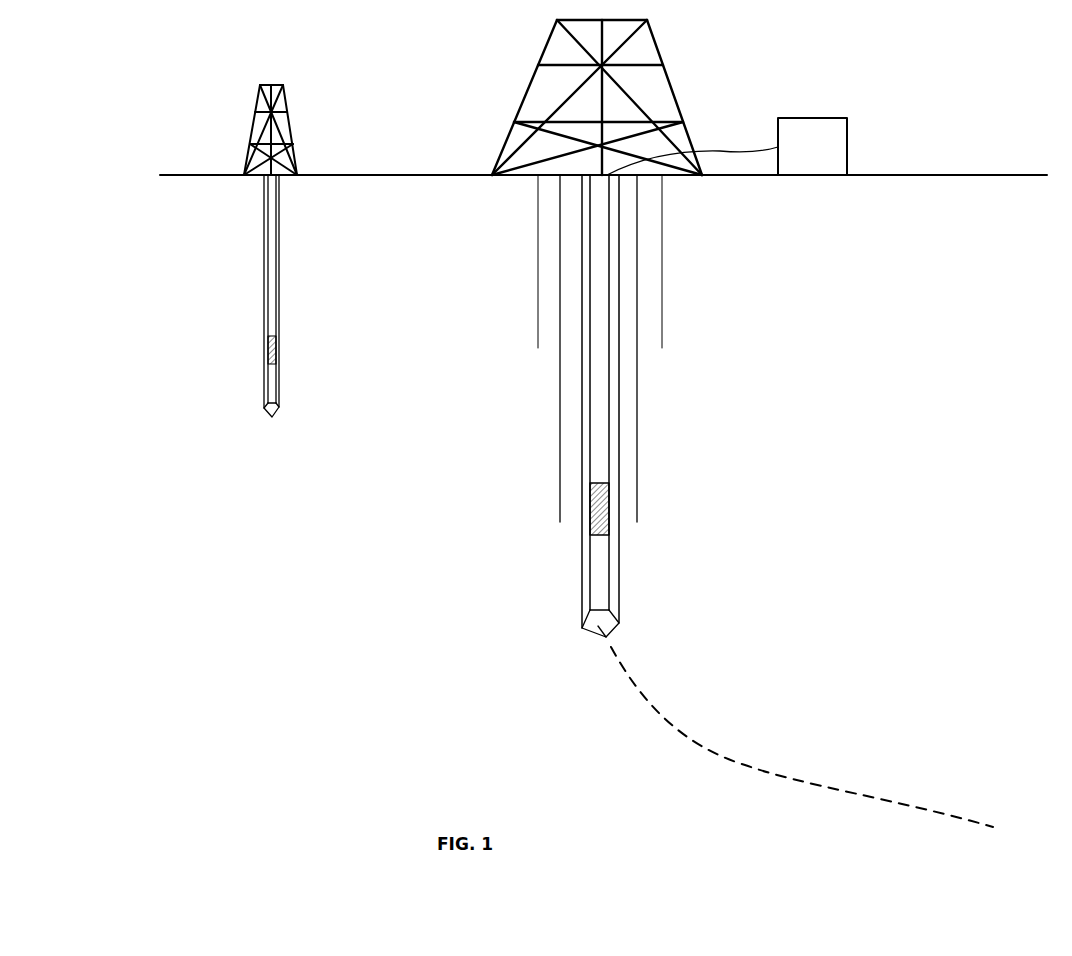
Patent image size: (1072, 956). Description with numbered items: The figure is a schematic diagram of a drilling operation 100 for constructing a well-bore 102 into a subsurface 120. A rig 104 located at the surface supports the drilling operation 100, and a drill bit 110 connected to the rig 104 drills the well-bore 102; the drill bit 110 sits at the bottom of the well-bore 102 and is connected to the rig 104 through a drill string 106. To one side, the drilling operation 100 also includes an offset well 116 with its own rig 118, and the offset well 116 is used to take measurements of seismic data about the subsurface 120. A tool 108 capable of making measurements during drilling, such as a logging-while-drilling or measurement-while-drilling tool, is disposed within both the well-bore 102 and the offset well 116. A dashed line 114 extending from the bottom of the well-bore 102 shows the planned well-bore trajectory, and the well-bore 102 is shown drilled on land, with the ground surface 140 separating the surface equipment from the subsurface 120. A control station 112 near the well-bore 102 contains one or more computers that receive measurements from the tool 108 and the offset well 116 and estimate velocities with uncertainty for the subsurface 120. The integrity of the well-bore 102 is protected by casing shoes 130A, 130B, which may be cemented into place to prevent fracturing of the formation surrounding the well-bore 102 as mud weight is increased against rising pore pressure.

The drilling operation 100 is at (108, 110).
The well-bore 102 is at (619, 388).
The rig 104 is at (675, 88).
The drill string 106 is at (590, 358).
The tool 108 is at (599, 538).
The drill bit 110 is at (592, 626).
The control station 112 is at (813, 118).
The dashed line 114 is at (750, 765).
The offset well 116 is at (279, 293).
The rig 118 is at (286, 104).
The subsurface 120 is at (874, 462).
The casing shoe 130A is at (538, 195).
The casing shoe 130B is at (560, 484).
The surface 140 is at (920, 175).